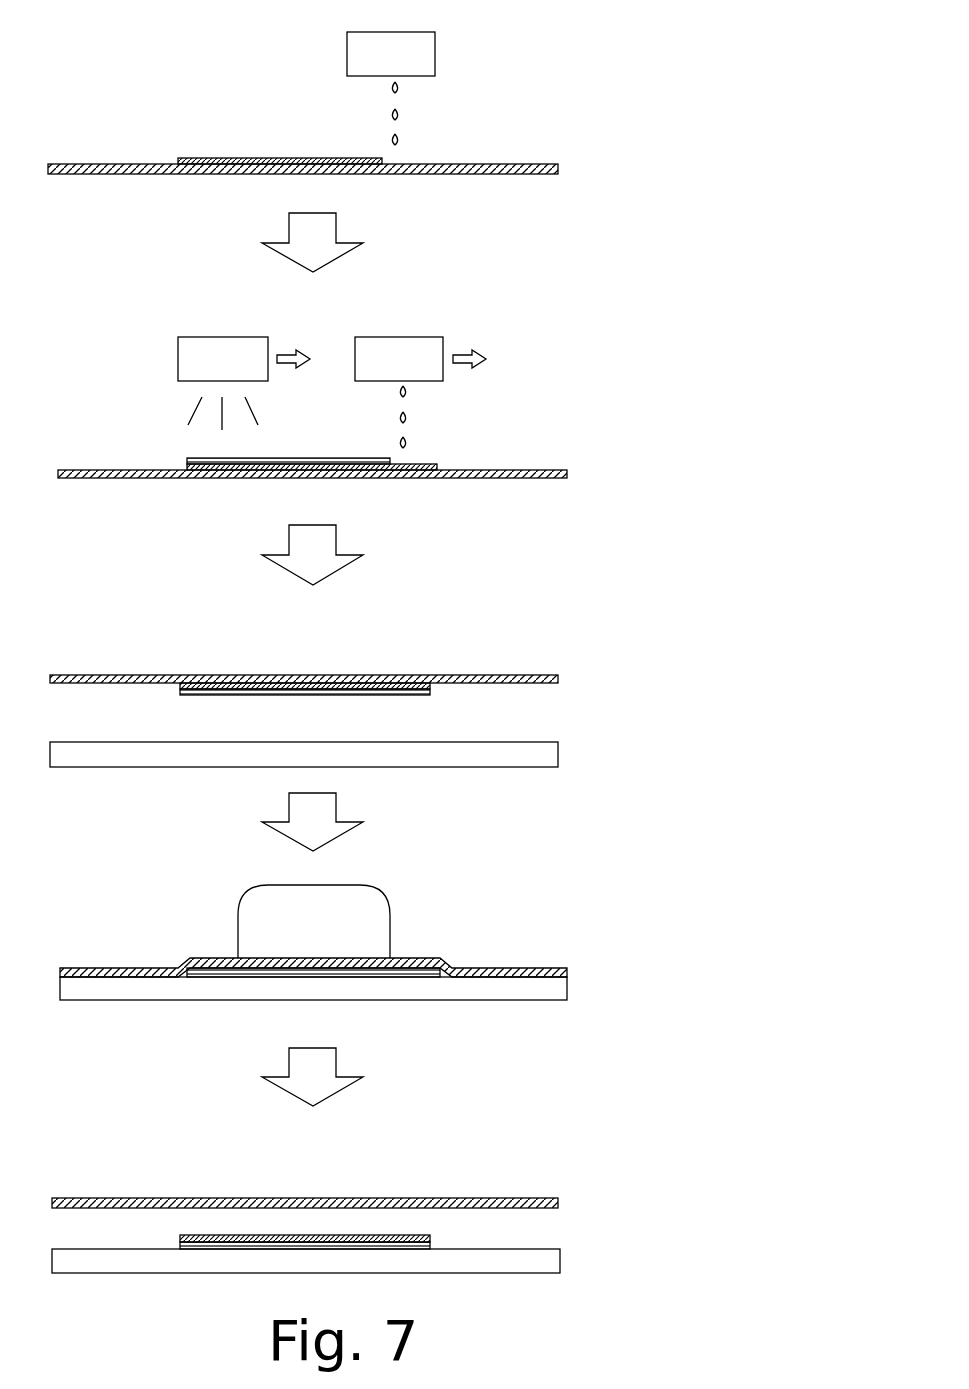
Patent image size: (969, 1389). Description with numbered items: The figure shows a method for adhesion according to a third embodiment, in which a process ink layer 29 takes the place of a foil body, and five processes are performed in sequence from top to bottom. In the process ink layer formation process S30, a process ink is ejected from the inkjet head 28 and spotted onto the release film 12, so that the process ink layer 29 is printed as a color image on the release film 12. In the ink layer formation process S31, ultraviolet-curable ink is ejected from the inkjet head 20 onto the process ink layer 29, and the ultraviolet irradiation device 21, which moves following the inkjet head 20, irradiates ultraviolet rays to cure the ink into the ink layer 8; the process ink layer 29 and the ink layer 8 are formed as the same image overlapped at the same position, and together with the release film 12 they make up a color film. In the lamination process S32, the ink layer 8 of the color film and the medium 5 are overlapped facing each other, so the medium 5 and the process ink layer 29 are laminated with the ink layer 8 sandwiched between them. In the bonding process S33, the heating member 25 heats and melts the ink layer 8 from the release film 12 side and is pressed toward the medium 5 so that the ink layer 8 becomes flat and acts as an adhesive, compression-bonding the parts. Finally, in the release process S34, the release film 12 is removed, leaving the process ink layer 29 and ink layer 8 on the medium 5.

The medium 5 is at (558, 752).
The ink layer 8 is at (187, 462).
The release film 12 is at (560, 168).
The inkjet head 20 is at (394, 337).
The ultraviolet irradiation device 21 is at (218, 337).
The heating member 25 is at (391, 918).
The inkjet head 28 is at (388, 32).
The process ink layer 29 is at (178, 161).
The process ink layer formation process S30 is at (334, 93).
The ink layer formation process S31 is at (339, 390).
The lamination process S32 is at (332, 680).
The bonding process S33 is at (341, 940).
The release process S34 is at (333, 1195).